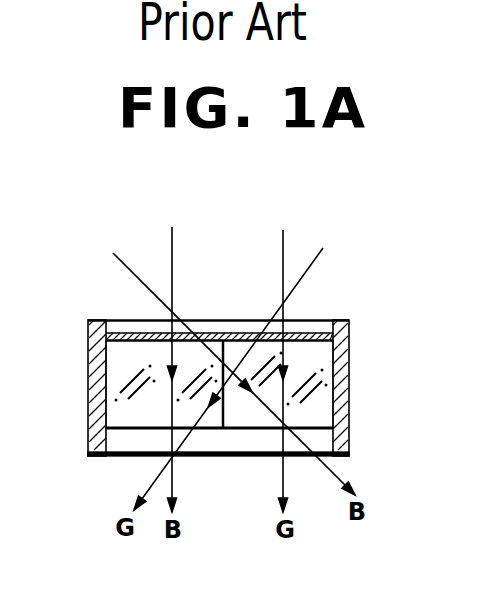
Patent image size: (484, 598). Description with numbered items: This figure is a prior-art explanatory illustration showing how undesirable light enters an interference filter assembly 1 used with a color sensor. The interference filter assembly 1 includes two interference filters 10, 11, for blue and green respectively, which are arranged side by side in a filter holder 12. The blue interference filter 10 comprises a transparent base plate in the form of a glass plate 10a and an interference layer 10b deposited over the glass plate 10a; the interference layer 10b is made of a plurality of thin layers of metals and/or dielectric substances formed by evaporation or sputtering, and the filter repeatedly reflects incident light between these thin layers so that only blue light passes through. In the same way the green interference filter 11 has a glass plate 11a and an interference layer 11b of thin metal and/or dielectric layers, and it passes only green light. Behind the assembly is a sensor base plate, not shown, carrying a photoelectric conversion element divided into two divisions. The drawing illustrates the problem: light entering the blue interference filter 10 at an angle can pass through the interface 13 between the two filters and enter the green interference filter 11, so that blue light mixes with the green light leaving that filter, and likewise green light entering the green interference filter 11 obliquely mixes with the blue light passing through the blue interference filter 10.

The interference filter assembly 1 is at (227, 233).
The interference filter 10 is at (134, 360).
The glass plate 10a is at (127, 413).
The interference layer 10b is at (137, 333).
The interference filter 11 is at (324, 384).
The glass plate 11a is at (320, 412).
The interference layer 11b is at (313, 330).
The filter holder 12 is at (96, 432).
The interface 13 is at (225, 348).